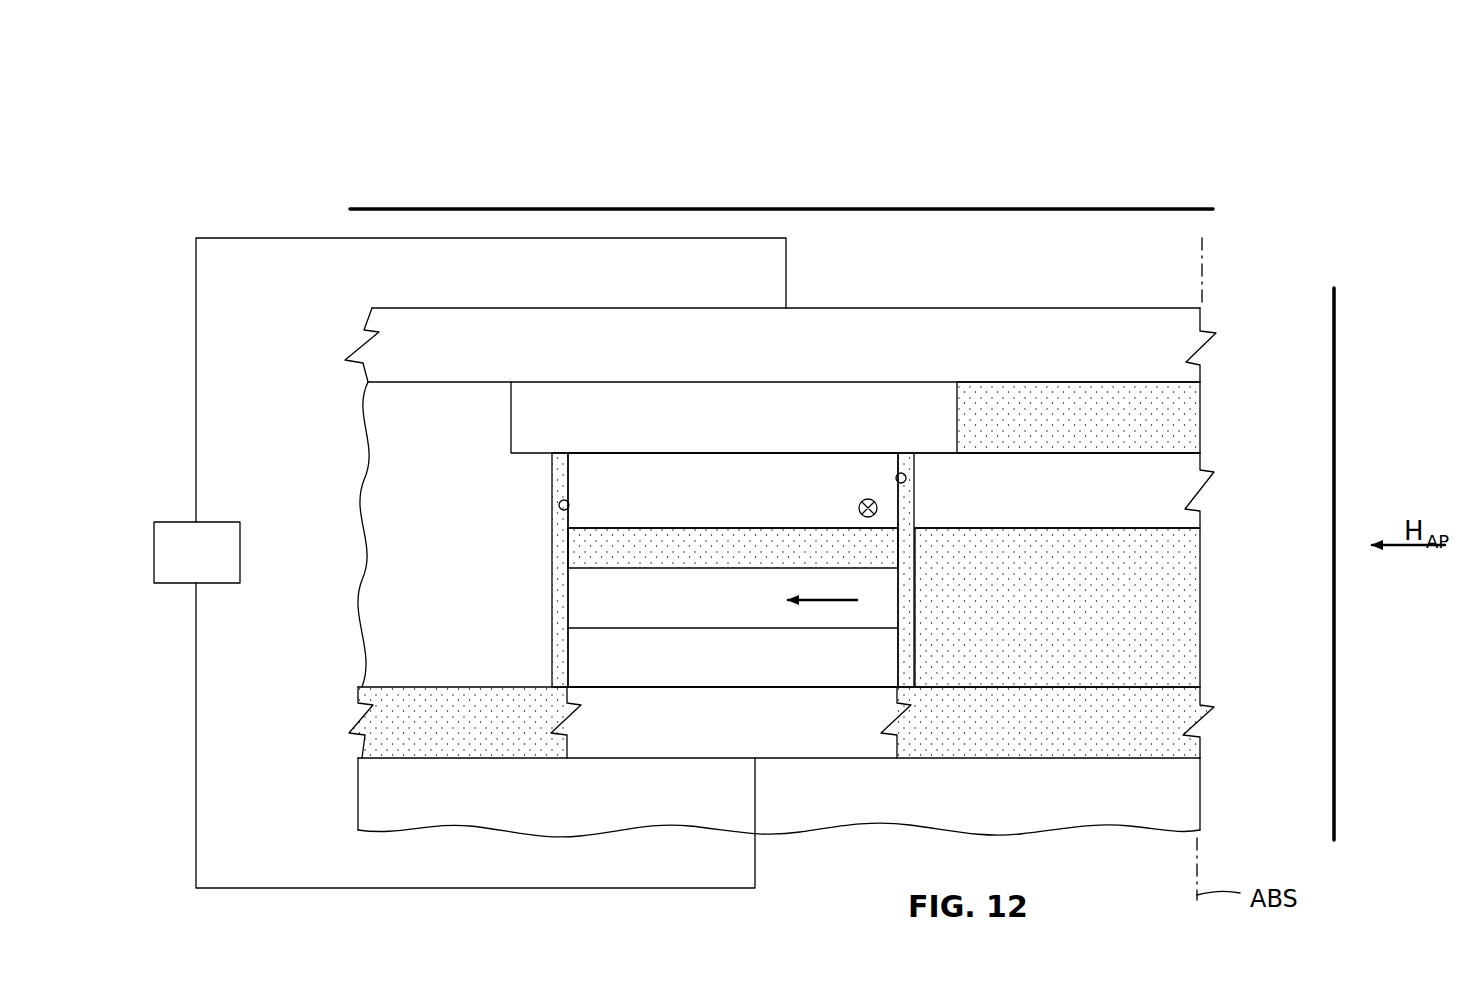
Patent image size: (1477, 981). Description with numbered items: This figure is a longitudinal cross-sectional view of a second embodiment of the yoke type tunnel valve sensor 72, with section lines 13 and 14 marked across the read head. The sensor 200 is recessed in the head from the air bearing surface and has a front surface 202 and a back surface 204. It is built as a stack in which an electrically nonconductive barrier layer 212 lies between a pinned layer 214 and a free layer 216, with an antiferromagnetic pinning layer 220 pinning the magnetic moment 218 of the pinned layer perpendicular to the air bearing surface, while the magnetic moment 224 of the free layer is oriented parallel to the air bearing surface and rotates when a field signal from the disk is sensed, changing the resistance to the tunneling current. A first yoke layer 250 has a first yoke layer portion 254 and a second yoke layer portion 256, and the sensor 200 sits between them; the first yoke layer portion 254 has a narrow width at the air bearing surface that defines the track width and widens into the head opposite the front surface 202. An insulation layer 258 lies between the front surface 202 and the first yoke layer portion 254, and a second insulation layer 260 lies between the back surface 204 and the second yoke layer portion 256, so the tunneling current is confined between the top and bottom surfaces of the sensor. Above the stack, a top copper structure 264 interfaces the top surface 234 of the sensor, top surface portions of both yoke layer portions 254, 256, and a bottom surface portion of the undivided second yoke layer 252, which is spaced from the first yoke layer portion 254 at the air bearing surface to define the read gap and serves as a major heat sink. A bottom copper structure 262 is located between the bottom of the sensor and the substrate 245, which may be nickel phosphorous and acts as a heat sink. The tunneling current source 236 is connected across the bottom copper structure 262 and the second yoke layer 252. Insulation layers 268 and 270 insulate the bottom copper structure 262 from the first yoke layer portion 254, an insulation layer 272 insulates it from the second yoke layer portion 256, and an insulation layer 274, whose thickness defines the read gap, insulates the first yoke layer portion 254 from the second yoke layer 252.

The section line 13- 13 is at (359, 196).
The section line 14- 14 is at (1346, 297).
The yoke type tunnel valve sensor 72 is at (325, 291).
The tunneling current source 236 is at (235, 540).
The second yoke layer 252 is at (837, 365).
The top copper structure 264 is at (837, 432).
The insulation layer 274 is at (1190, 418).
The first yoke layer 250 is at (478, 617).
The second yoke layer portion 256 is at (378, 481).
The first yoke layer portion 254 is at (1192, 468).
The insulation layer 270 is at (1190, 610).
The second insulation layer 260 is at (552, 481).
The insulation layer 258 is at (914, 500).
The sensor 200 is at (632, 447).
The free layer 216 is at (637, 492).
The top surface of the sensor 234 is at (678, 452).
The front surface 202 is at (896, 472).
The back surface 204 is at (569, 507).
The magnetic moment of the free layer 224 is at (857, 506).
The barrier layer 212 is at (648, 564).
The pinned layer 214 is at (648, 615).
The magnetic moment of the pinned layer 218 is at (826, 603).
The antiferromagnetic pinning layer 220 is at (648, 674).
The bottom copper structure 262 is at (648, 734).
The insulation layer 272 is at (378, 751).
The insulation layer 268 is at (1190, 748).
The substrate 245 is at (830, 815).